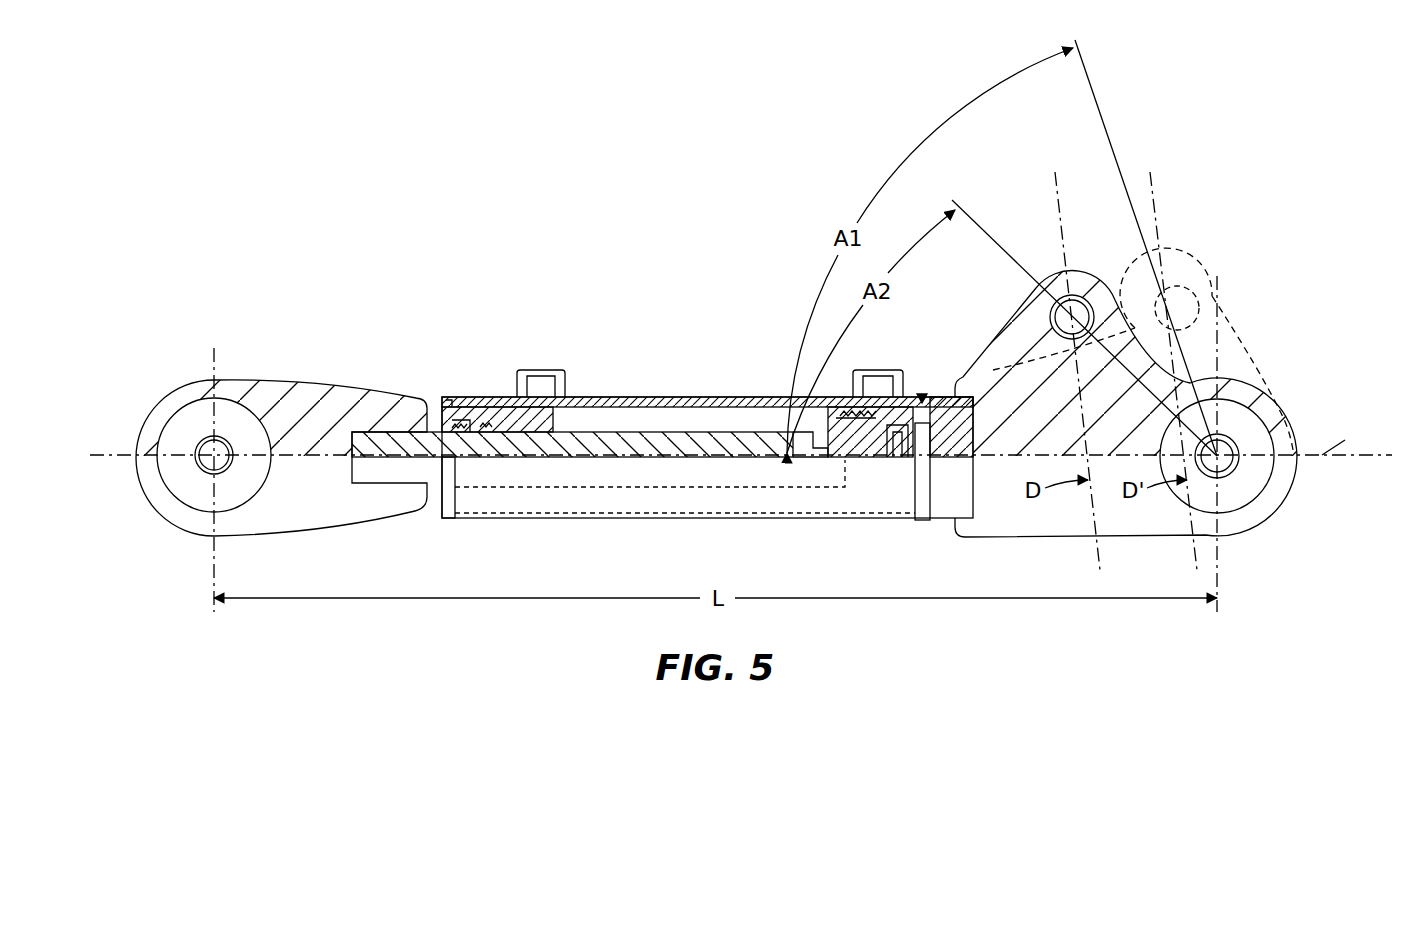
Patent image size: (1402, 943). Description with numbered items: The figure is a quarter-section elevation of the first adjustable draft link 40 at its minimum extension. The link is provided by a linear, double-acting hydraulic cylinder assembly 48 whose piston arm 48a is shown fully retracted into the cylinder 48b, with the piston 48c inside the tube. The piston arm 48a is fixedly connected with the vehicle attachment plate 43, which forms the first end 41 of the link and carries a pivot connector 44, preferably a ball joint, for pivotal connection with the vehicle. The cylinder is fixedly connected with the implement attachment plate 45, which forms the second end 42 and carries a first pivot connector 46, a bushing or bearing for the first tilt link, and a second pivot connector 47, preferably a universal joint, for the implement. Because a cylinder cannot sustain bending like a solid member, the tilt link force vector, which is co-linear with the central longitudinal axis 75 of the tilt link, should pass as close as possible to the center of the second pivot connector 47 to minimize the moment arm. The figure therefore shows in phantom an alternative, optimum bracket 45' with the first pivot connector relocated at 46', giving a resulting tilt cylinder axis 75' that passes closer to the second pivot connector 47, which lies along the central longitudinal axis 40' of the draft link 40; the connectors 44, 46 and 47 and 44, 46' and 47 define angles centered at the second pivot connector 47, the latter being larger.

The first adjustable draft link 40 is at (741, 444).
The central longitudinal axis 40' is at (1356, 440).
The first end 41 is at (143, 497).
The second end 42 is at (1293, 477).
The vehicle attachment plate 43 is at (325, 506).
The pivot connector 44 is at (202, 480).
The implement attachment plate 45 is at (1126, 404).
The implement mounting bracket 45' is at (1170, 349).
The first pivot connector 46 is at (1029, 313).
The relocated first pivot connector 46' is at (1218, 308).
The second pivot connector 47 is at (1247, 474).
The hydraulic cylinder assembly 48 is at (707, 395).
The piston arm 48a is at (433, 440).
The cylinder 48b is at (520, 500).
The piston 48c is at (898, 458).
The central longitudinal axis of tilt link 75 is at (1044, 371).
The resulting tilt cylinder axis 75' is at (1193, 371).